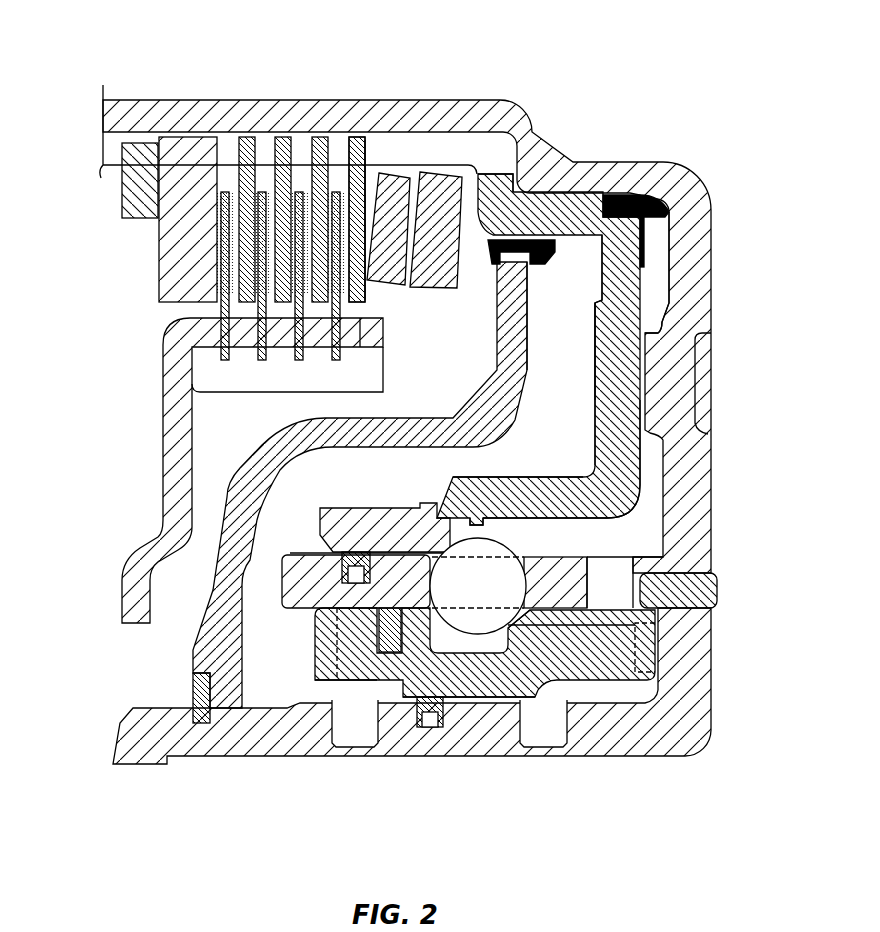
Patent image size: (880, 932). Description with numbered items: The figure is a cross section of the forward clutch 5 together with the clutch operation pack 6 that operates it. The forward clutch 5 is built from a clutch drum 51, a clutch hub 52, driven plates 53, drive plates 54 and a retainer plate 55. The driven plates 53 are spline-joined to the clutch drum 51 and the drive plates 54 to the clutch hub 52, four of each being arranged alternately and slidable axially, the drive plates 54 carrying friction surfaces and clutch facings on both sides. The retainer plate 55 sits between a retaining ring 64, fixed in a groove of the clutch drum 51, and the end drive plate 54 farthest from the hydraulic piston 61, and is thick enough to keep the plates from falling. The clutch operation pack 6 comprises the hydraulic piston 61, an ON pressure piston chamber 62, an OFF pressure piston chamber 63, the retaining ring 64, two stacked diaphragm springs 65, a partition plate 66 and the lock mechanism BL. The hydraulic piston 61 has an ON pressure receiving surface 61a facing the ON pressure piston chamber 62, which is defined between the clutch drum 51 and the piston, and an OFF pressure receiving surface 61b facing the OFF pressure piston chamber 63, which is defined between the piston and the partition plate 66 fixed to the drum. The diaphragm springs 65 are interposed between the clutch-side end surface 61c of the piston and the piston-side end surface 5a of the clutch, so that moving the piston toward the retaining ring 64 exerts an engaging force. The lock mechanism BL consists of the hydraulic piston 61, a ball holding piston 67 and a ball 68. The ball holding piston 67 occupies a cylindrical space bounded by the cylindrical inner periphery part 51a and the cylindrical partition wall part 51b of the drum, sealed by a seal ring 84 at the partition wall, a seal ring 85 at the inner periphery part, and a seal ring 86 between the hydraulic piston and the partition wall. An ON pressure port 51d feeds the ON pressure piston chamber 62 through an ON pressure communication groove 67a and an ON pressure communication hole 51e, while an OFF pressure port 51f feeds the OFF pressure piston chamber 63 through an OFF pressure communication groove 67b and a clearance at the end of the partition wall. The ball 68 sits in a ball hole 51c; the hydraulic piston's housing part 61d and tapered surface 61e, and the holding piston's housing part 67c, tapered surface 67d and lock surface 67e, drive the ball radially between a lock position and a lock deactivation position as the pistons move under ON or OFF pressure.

The forward clutch 5 is at (338, 143).
The piston-side end surface 5a is at (372, 225).
The clutch operation pack 6 is at (659, 247).
The clutch drum 51 is at (299, 97).
The cylindrical inner periphery part 51a is at (606, 732).
The cylindrical partition wall part 51b is at (397, 580).
The ball hole 51c is at (440, 518).
The ON pressure port 51d is at (544, 730).
The ON pressure communication hole 51e is at (588, 577).
The OFF pressure port 51f is at (352, 730).
The clutch hub 52 is at (178, 426).
The driven plates 53 is at (247, 150).
The drive plates 54 is at (228, 298).
The retainer plate 55 is at (180, 263).
The hydraulic piston 61 is at (617, 307).
The ON pressure receiving surface 61a is at (645, 455).
The OFF pressure receiving surface 61b is at (597, 345).
The clutch-side end surface 61c is at (475, 178).
The housing part 61d is at (507, 523).
The tapered surface 61e is at (474, 520).
The ON pressure piston chamber 62 is at (621, 532).
The OFF pressure piston chamber 63 is at (533, 405).
The retaining ring 64 is at (120, 207).
The diaphragm springs 65 is at (397, 227).
The partition plate 66 is at (437, 432).
The ball holding piston 67 is at (452, 676).
The ON pressure communication groove 67a is at (637, 671).
The OFF pressure communication groove 67b is at (330, 660).
The housing part 67c is at (656, 690).
The tapered surface 67d is at (641, 630).
The lock surface 67e is at (706, 590).
The ball 68 is at (484, 578).
The seal ring 84 is at (390, 637).
The seal ring 85 is at (430, 724).
The seal ring 86 is at (356, 568).
The lock mechanism BL is at (480, 660).